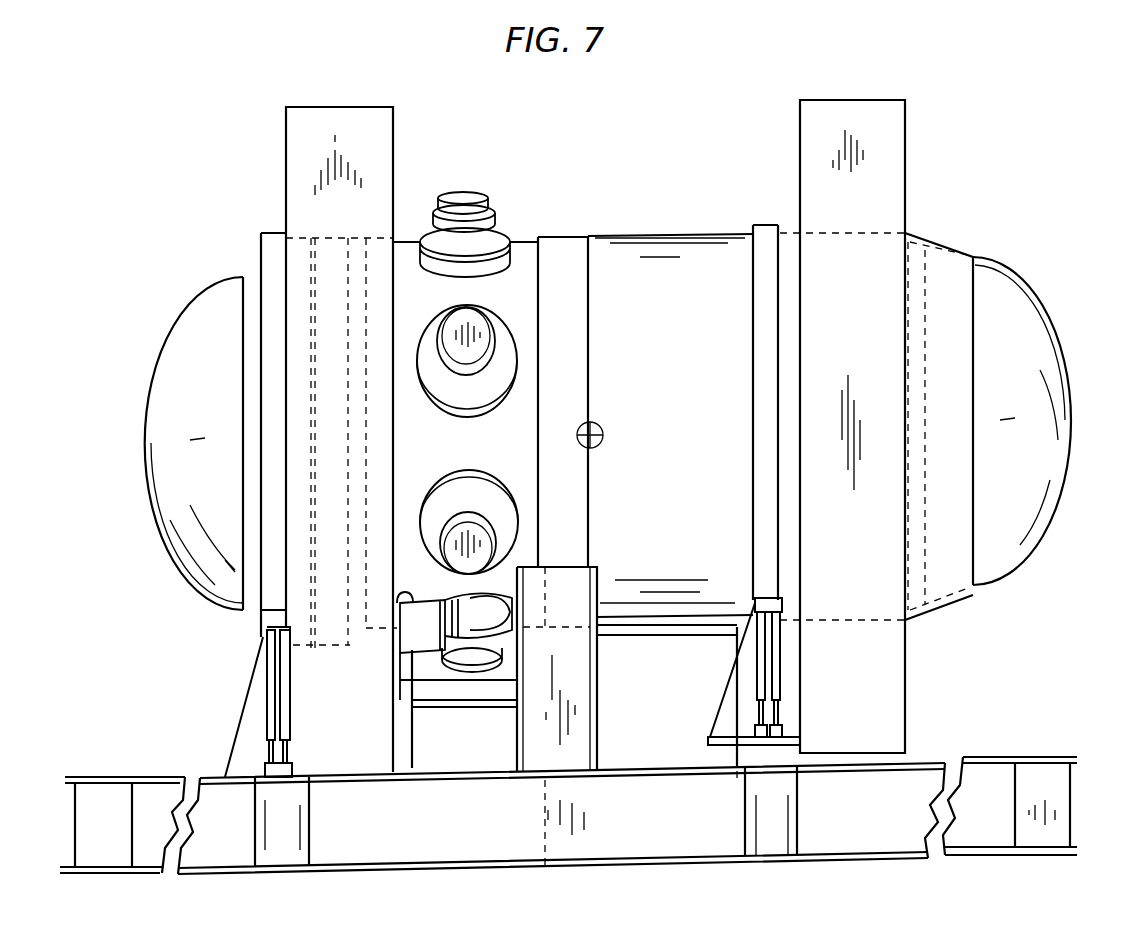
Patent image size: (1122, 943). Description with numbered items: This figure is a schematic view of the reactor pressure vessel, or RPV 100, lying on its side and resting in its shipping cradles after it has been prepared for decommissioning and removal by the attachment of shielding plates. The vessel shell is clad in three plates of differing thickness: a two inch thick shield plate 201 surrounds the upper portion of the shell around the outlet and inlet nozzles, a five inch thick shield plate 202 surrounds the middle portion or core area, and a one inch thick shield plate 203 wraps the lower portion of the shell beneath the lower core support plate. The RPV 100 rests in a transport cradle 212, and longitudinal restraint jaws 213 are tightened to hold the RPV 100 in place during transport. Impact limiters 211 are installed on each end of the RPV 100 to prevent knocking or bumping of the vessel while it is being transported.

The RPV 100 is at (985, 674).
The shield plate 201 is at (523, 242).
The shield plate 202 is at (625, 234).
The shield plate 203 is at (928, 243).
The impact limiters 211 is at (905, 145).
The transport cradle 212 is at (780, 658).
The longitudinal restraint jaws 213 is at (398, 597).